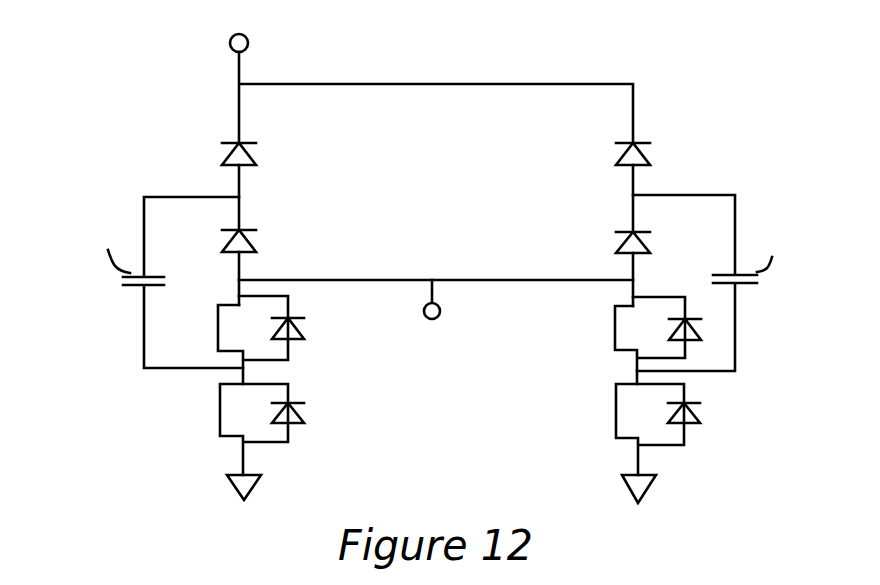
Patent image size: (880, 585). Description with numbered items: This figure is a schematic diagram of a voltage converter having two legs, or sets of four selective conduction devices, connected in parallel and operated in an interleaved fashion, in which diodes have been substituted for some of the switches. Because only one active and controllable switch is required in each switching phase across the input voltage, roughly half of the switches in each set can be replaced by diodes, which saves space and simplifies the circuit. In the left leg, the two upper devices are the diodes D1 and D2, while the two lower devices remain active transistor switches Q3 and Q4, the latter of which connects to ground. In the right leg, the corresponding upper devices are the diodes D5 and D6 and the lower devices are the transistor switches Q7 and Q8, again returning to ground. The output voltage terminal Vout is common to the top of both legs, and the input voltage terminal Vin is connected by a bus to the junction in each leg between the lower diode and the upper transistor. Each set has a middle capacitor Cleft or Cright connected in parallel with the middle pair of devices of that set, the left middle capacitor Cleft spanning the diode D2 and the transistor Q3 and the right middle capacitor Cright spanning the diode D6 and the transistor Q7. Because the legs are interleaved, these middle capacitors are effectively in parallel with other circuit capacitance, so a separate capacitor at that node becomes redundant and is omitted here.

The diode D1 is at (219, 155).
The diode D2 is at (219, 244).
The diode D5 is at (655, 156).
The diode D6 is at (655, 245).
The transistor switch Q3 is at (261, 340).
The transistor switch Q4 is at (262, 429).
The transistor switch Q7 is at (658, 340).
The transistor switch Q8 is at (658, 429).
The output voltage terminal Vout is at (203, 33).
The input voltage terminal Vin is at (441, 321).
The middle capacitor Cleft is at (129, 282).
The middle capacitor Cright is at (745, 283).